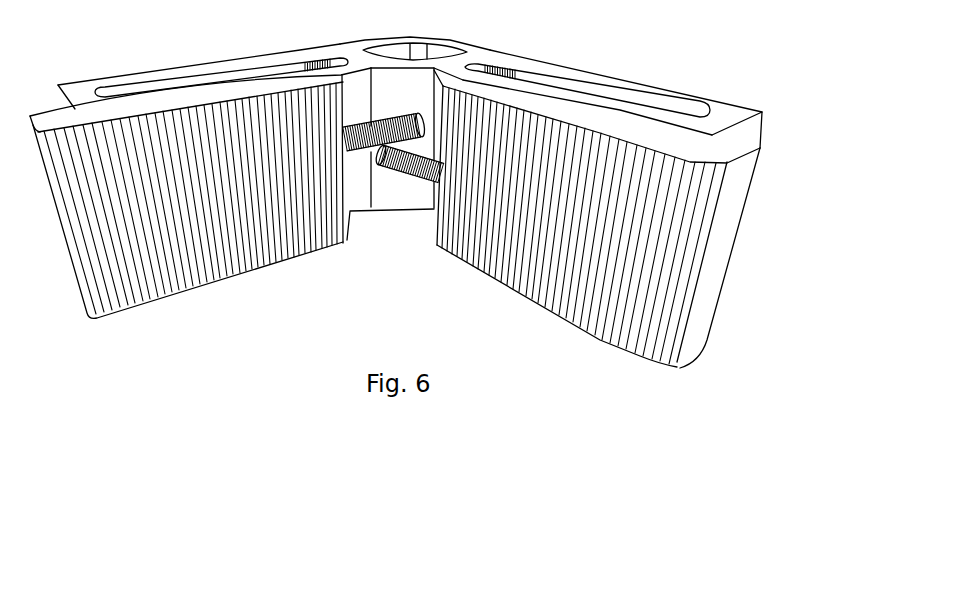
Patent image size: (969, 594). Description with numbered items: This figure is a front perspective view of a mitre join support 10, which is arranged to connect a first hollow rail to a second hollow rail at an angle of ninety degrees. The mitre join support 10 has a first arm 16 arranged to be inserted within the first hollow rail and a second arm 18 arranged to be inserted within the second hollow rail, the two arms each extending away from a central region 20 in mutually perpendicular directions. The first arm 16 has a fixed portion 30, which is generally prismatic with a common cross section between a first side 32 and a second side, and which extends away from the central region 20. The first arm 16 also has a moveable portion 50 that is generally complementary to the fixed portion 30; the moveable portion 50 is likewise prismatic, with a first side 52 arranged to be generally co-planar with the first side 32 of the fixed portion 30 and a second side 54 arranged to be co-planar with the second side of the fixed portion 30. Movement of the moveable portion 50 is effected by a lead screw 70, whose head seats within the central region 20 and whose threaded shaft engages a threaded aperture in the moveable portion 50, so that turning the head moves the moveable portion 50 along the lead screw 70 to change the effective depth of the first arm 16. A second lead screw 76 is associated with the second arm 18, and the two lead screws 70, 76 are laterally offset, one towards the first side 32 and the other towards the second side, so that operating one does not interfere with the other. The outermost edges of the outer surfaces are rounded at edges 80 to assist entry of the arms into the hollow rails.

The mitre join support 10 is at (125, 76).
The first arm 16 is at (557, 66).
The second arm 18 is at (248, 77).
The central region 20 is at (445, 42).
The fixed portion 30 is at (657, 85).
The first side 32 is at (732, 110).
The moveable portion 50 is at (548, 268).
The first side 52 is at (715, 143).
The second side 54 is at (618, 346).
The lead screw 70 is at (403, 172).
The lead screw 76 is at (372, 137).
The rounded edges 80 is at (760, 113).